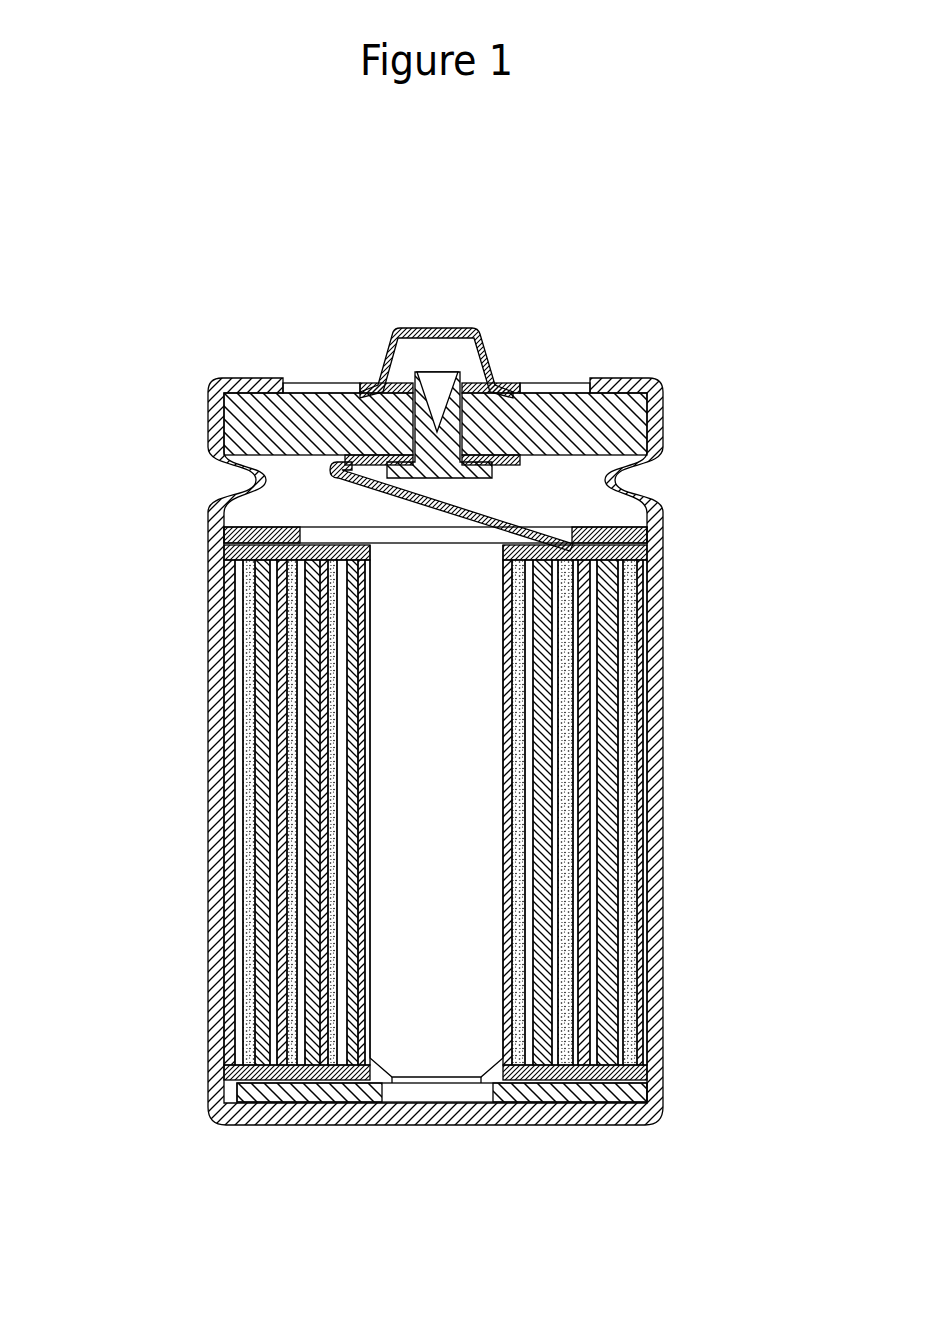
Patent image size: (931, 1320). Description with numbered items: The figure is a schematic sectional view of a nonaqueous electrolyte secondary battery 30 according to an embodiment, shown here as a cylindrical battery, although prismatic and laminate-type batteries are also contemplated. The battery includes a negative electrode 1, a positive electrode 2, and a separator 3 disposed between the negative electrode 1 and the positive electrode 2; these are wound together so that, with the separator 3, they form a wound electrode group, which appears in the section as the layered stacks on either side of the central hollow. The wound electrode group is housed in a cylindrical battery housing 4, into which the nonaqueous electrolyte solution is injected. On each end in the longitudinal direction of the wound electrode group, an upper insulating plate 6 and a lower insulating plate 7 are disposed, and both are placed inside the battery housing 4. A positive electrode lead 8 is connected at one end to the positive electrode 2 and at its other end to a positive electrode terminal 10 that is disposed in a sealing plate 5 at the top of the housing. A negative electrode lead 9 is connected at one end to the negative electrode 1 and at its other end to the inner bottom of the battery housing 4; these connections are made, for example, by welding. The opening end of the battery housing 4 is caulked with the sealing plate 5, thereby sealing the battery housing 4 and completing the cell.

The negative electrode 1 is at (245, 697).
The positive electrode 2 is at (248, 782).
The separator 3 is at (248, 837).
The battery housing 4 is at (663, 867).
The sealing plate 5 is at (548, 392).
The upper insulating plate 6 is at (597, 528).
The lower insulating plate 7 is at (583, 1102).
The positive electrode lead 8 is at (430, 515).
The negative electrode lead 9 is at (238, 652).
The positive electrode terminal 10 is at (438, 328).
The nonaqueous electrolyte secondary battery 30 is at (463, 196).